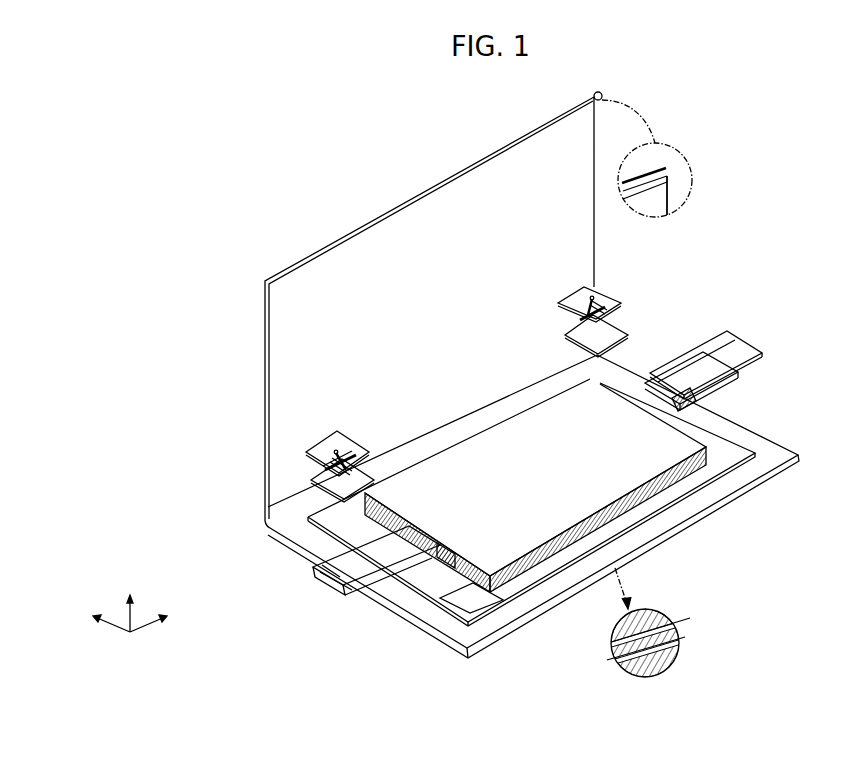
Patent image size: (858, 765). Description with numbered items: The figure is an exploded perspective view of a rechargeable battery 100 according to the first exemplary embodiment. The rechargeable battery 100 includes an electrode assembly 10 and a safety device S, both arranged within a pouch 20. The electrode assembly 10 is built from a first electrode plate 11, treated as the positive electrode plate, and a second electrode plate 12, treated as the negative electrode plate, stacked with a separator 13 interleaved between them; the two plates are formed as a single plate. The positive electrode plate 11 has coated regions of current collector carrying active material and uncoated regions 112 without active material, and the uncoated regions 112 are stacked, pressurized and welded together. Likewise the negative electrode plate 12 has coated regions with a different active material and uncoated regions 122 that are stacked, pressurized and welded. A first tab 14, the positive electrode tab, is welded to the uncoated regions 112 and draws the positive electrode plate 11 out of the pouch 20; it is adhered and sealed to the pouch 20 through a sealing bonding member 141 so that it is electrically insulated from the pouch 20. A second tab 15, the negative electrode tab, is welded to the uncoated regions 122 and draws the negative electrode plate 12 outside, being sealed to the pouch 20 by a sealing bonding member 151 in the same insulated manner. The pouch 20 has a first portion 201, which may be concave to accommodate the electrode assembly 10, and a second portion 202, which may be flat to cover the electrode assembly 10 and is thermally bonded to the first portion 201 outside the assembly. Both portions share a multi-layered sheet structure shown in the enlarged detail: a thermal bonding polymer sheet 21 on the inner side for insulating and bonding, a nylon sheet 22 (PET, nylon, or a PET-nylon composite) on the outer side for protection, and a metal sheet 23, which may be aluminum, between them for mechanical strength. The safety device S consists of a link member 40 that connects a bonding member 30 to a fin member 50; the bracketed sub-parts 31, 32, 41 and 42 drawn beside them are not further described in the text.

The rechargeable battery 100 is at (356, 107).
The electrode assembly 10 is at (549, 474).
The first electrode plate 11 is at (668, 620).
The second electrode plate 12 is at (678, 641).
The separator 13 is at (673, 632).
The first tab 14 is at (324, 591).
The sealing bonding member 141 is at (312, 574).
The second tab 15 is at (753, 343).
The sealing bonding member 151 is at (722, 352).
The uncoated regions 112 is at (440, 550).
The uncoated regions 122 is at (692, 403).
The pouch 20 is at (443, 375).
The first portion 201 is at (291, 540).
The second portion 202 is at (266, 318).
The thermal bonding polymer sheet 21 is at (663, 187).
The nylon sheet 22 is at (647, 172).
The metal sheet 23 is at (656, 178).
The bonding member 30 is at (358, 404).
The lower connection plate 31 is at (311, 483).
The upper connection plate 32 is at (306, 452).
The link member 40 is at (346, 383).
The first fastener 41 is at (349, 466).
The second fastener 42 is at (338, 450).
The fin member 50 is at (326, 463).
The safety device S is at (318, 420).